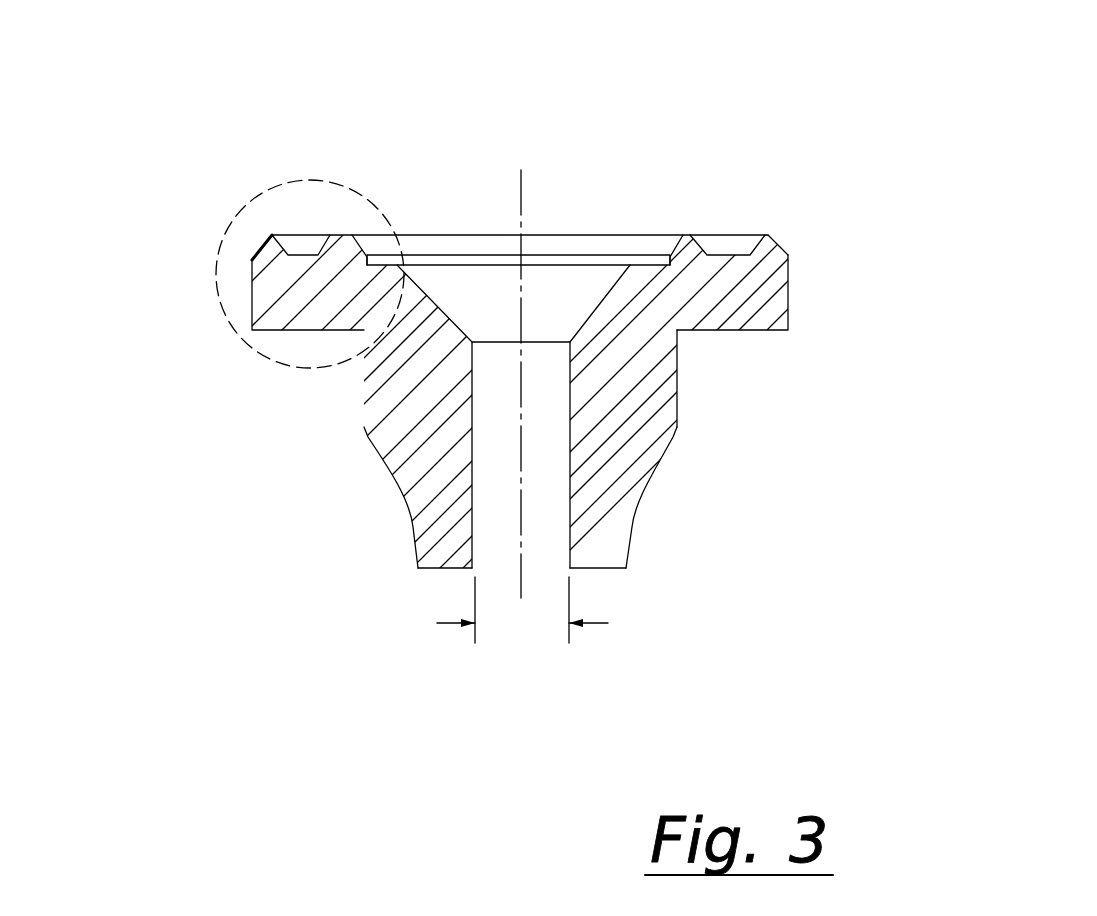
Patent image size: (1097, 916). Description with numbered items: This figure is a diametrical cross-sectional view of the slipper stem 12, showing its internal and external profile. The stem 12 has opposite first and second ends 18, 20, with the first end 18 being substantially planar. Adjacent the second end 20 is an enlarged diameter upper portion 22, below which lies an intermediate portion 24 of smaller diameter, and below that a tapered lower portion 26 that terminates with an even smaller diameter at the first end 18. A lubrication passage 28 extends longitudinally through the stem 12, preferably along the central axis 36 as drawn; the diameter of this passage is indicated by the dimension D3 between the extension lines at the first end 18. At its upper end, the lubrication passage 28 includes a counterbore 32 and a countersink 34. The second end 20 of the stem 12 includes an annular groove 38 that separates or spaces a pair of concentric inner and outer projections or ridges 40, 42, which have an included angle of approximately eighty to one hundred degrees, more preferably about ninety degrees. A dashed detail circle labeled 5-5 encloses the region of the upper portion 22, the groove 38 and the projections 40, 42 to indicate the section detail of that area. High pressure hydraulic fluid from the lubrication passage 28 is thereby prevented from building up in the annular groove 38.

The stem 12 is at (805, 262).
The first end 18 is at (447, 570).
The second end 20 is at (723, 236).
The enlarged diameter upper portion 22 is at (252, 283).
The intermediate portion 24 is at (679, 400).
The tapered lower portion 26 is at (636, 507).
The lubrication passage 28 is at (558, 510).
The counterbore 32 is at (650, 257).
The countersink 34 is at (623, 282).
The central axis 36 is at (521, 485).
The annular groove 38 is at (315, 256).
The inner projection 40 is at (352, 237).
The outer projection 42 is at (272, 235).
The section detail circle 5-5 is at (260, 352).
The bore diameter D3 is at (522, 610).